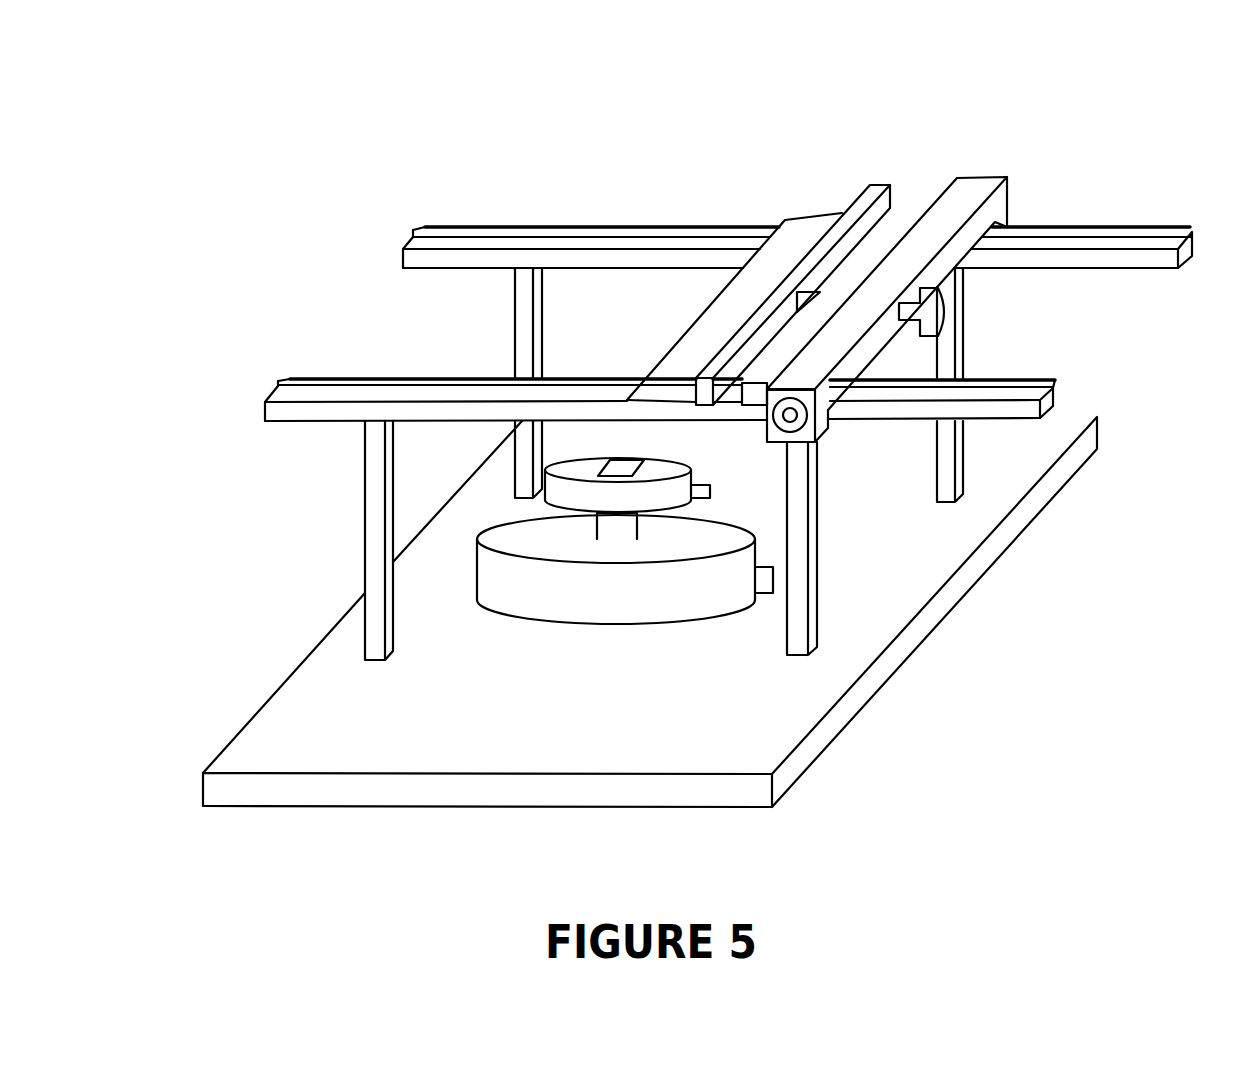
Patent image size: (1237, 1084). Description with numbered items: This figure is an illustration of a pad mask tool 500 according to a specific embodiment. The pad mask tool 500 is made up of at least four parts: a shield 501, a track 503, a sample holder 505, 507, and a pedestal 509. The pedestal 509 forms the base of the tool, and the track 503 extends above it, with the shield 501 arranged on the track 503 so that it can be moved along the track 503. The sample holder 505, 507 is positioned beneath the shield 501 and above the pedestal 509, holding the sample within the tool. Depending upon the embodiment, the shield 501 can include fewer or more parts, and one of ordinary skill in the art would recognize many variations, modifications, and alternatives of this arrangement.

The pad mask tool 500 is at (1020, 122).
The shield 501 is at (798, 230).
The track 503 is at (1148, 259).
The sample holder 505 is at (616, 463).
The sample holder 507 is at (735, 592).
The pedestal 509 is at (598, 785).